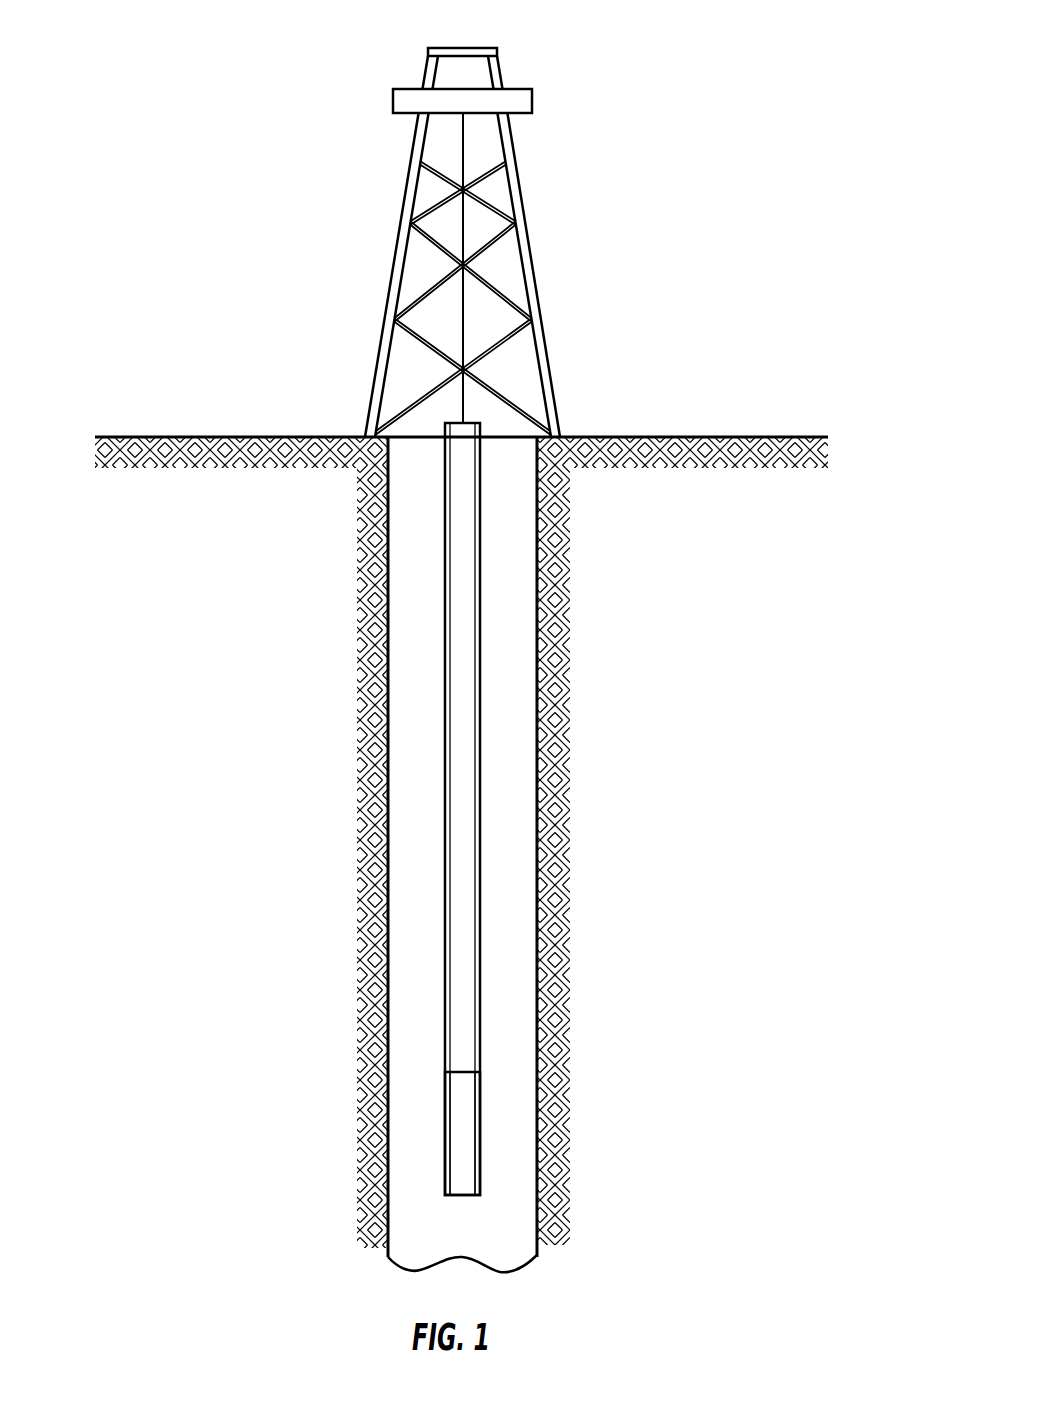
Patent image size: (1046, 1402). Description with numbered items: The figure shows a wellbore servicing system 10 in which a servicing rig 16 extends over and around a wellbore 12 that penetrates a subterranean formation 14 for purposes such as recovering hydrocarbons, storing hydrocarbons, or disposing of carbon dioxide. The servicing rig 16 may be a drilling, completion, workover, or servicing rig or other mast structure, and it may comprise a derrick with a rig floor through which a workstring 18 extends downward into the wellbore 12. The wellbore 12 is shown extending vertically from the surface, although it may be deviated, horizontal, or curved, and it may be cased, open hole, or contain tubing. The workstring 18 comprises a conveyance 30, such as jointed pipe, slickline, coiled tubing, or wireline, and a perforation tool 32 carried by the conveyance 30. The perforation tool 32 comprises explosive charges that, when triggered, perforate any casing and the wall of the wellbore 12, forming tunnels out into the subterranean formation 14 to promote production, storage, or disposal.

The wellbore servicing system 10 is at (331, 153).
The wellbore 12 is at (415, 631).
The subterranean formation 14 is at (370, 795).
The servicing rig 16 is at (513, 148).
The workstring 18 is at (338, 908).
The conveyance 30 is at (480, 776).
The perforation tool 32 is at (445, 1148).